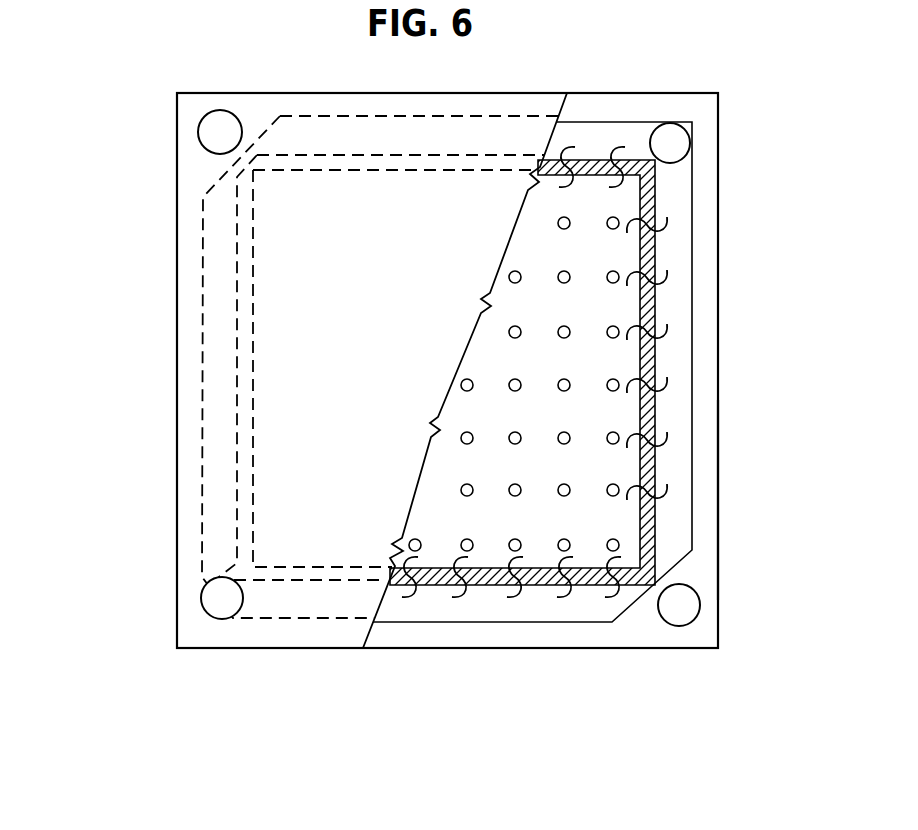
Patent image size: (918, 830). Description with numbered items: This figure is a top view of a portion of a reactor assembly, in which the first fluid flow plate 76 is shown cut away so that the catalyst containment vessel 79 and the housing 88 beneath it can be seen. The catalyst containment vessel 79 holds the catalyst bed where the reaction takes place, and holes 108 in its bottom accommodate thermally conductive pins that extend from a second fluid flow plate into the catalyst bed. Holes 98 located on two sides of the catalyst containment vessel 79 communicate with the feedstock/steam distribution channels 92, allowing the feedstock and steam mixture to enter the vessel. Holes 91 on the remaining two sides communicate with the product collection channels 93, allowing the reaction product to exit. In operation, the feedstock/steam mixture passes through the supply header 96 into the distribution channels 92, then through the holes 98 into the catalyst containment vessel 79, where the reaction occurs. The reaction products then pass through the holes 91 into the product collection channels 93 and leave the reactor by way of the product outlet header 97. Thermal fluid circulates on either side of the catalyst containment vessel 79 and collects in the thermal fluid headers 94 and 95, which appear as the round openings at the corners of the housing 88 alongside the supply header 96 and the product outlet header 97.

The first fluid flow plate 76 is at (177, 348).
The housing 88 is at (720, 502).
The feedstock/steam distribution channels 92 is at (633, 138).
The product collection channels 93 is at (298, 602).
The holes 91 is at (557, 585).
The catalyst containment vessel 79 is at (655, 360).
The holes 108 is at (572, 438).
The holes 98 is at (575, 160).
The thermal fluid header 94 is at (217, 133).
The thermal fluid header 95 is at (685, 605).
The supply header 96 is at (675, 143).
The product outlet header 97 is at (210, 598).